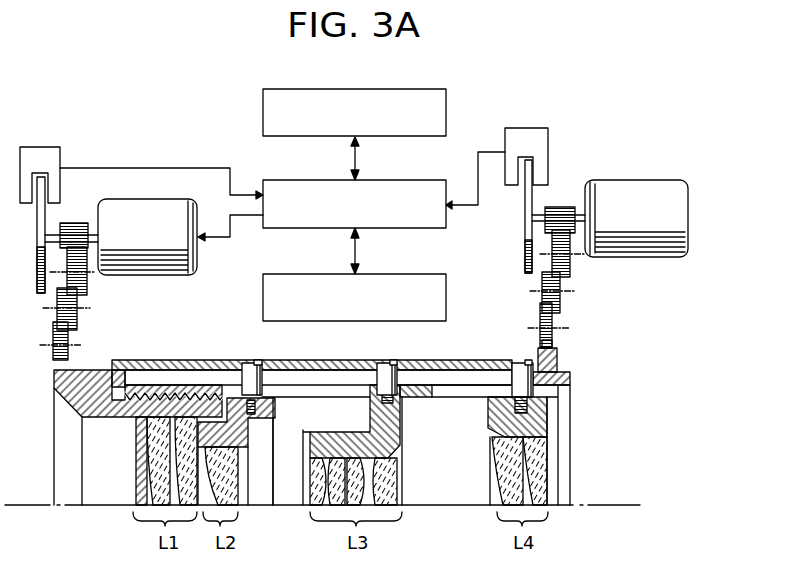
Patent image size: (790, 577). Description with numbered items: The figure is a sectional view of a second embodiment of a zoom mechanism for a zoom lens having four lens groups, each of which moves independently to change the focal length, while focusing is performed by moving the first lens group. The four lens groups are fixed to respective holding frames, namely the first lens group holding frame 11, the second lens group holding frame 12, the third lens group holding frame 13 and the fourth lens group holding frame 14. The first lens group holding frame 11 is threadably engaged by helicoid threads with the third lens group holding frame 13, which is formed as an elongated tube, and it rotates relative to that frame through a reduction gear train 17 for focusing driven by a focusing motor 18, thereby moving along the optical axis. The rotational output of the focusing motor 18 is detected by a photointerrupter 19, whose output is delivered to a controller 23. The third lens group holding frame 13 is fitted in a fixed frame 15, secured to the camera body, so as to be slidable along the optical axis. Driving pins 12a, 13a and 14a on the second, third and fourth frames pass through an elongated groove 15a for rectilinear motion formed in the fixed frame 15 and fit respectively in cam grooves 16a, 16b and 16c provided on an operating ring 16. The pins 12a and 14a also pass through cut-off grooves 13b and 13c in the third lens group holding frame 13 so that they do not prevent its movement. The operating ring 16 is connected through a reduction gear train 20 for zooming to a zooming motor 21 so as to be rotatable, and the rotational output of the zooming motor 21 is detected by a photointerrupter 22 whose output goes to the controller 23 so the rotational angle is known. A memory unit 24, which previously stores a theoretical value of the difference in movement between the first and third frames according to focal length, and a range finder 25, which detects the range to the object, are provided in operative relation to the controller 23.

The first lens group holding frame 11 is at (70, 398).
The second lens group holding frame 12 is at (250, 433).
The driving pin 12a is at (246, 363).
The third lens group holding frame 13 is at (400, 432).
The driving pin 13a is at (382, 365).
The cut-off groove 13b is at (304, 393).
The cut-off groove 13c is at (438, 395).
The fourth lens group holding frame 14 is at (549, 407).
The driving pin 14a is at (500, 378).
The fixed frame 15 is at (566, 373).
The elongated groove 15a is at (154, 372).
The operating ring 16 is at (478, 358).
The cam groove 16a is at (258, 360).
The cam groove 16b is at (393, 360).
The cam groove 16c is at (524, 362).
The reduction gear train for focusing 17 is at (95, 304).
The focusing motor 18 is at (181, 210).
The photointerrupter for focusing 19 is at (51, 155).
The reduction gear train for zooming 20 is at (582, 291).
The zooming motor 21 is at (635, 196).
The photointerrupter 22 is at (538, 140).
The controller 23 is at (432, 188).
The memory unit 24 is at (432, 278).
The range finder 25 is at (427, 96).